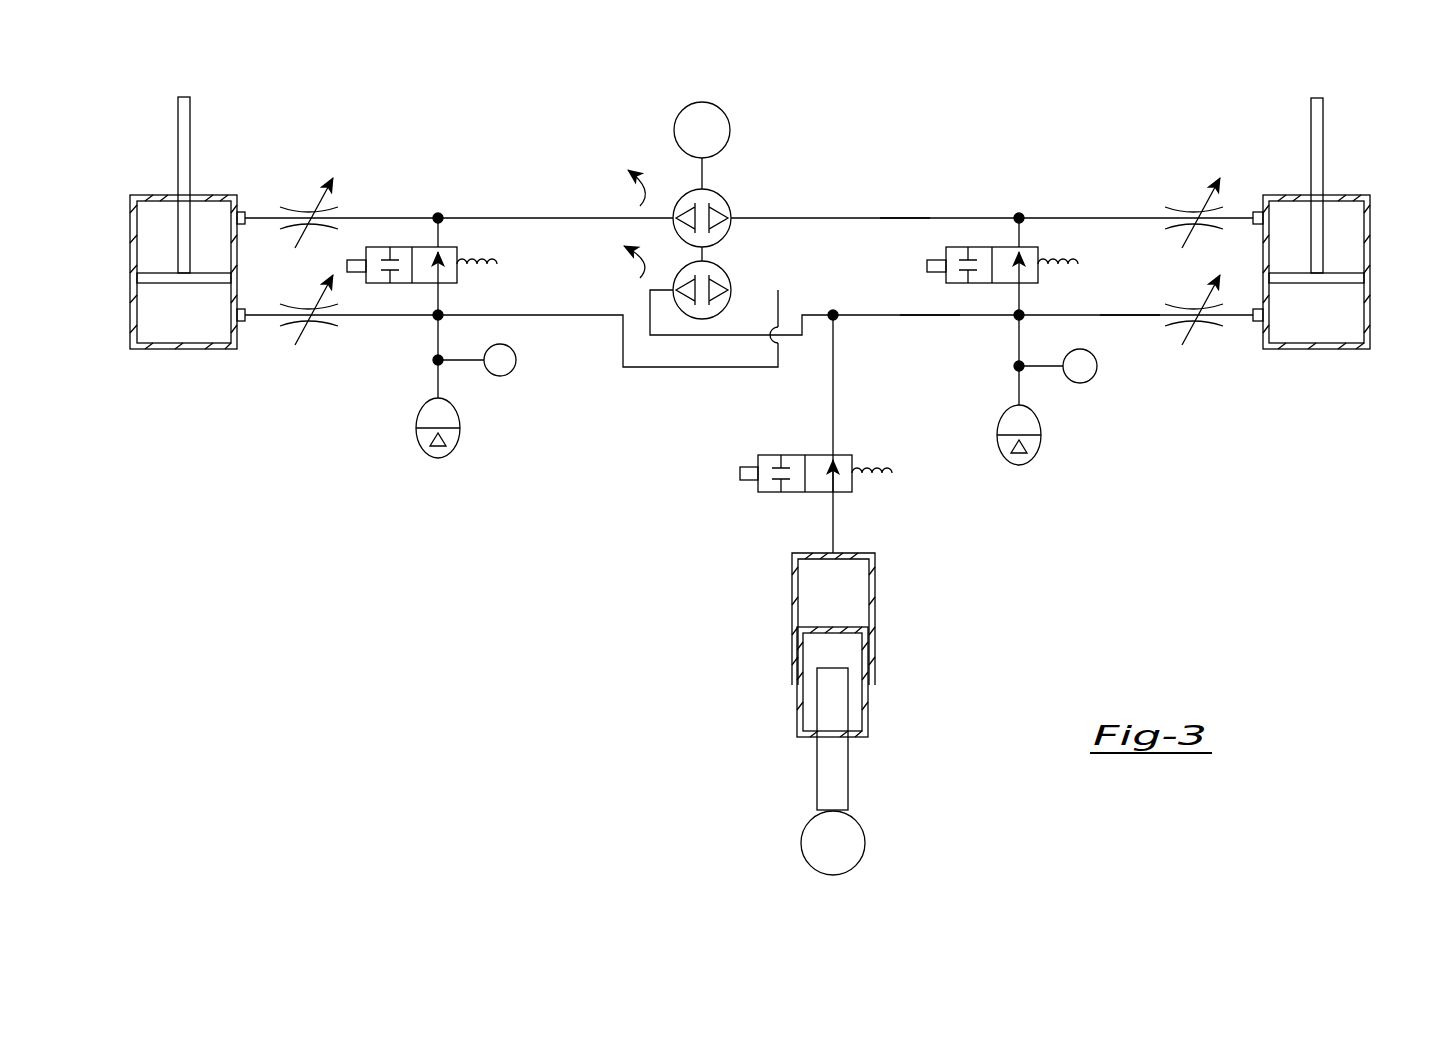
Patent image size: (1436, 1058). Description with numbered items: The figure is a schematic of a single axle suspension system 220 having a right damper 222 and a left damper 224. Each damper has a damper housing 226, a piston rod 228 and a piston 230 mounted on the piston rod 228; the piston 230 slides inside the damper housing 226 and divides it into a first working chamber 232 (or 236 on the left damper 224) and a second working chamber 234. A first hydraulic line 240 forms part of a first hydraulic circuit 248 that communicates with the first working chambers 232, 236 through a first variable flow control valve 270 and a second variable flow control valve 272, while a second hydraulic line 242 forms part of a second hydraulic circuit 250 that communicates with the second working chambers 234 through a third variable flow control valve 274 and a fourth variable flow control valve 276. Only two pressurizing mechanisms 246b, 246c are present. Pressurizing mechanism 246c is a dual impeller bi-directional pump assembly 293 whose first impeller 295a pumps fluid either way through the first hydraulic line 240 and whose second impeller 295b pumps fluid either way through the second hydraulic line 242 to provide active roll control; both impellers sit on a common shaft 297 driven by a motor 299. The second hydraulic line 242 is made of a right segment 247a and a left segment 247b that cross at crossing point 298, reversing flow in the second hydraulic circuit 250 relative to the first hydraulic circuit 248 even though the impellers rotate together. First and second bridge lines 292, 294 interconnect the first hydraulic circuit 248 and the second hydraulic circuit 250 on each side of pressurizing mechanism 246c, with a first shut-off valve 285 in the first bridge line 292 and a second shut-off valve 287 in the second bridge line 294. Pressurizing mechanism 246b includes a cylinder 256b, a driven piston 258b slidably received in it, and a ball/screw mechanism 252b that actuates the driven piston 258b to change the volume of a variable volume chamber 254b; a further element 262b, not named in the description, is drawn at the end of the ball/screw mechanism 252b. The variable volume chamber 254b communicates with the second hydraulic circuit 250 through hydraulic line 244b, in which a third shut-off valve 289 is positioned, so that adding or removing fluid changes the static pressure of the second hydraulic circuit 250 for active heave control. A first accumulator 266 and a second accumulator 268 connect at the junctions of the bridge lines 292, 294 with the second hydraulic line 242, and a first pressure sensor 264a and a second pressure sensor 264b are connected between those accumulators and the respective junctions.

The single axle suspension system 220 is at (268, 556).
The right damper 222 is at (1360, 178).
The left damper 224 is at (140, 178).
The damper housing 226 is at (130, 318).
The piston rod 228 is at (180, 103).
The piston 230 is at (150, 280).
The first working chamber 232 is at (1352, 241).
The second working chamber 234 is at (150, 333).
The first working chamber 236 is at (150, 242).
The first hydraulic line 240 is at (903, 217).
The second hydraulic line 242 is at (1130, 318).
The hydraulic line 244b is at (837, 378).
The pressurizing mechanism 246b is at (873, 547).
The pressurizing mechanism 246c is at (736, 172).
The right segment 247a is at (856, 314).
The left segment 247b is at (530, 314).
The first hydraulic circuit 248 is at (838, 217).
The second hydraulic circuit 250 is at (917, 318).
The ball/screw mechanism 252b is at (825, 758).
The variable volume chamber 254b is at (857, 597).
The cylinder 256b is at (794, 612).
The driven piston 258b is at (800, 702).
The cam follower ball 262b is at (818, 840).
The first pressure sensor 264a is at (510, 363).
The second pressure sensor 264b is at (1078, 368).
The first accumulator 266 is at (418, 432).
The second accumulator 268 is at (1040, 445).
The first variable flow control valve 270 is at (1178, 208).
The second variable flow control valve 272 is at (292, 208).
The third variable flow control valve 274 is at (1218, 322).
The fourth variable flow control valve 276 is at (290, 322).
The first shut-off valve 285 is at (983, 247).
The second shut-off valve 287 is at (405, 247).
The third shut-off valve 289 is at (845, 455).
The first bridge line 292 is at (1022, 230).
The dual impeller bi-directional pump assembly 293 is at (670, 249).
The second bridge line 294 is at (440, 230).
The first impeller 295a is at (727, 198).
The second impeller 295b is at (727, 276).
The common shaft 297 is at (700, 172).
The crossing point 298 is at (782, 342).
The motor 299 is at (705, 118).